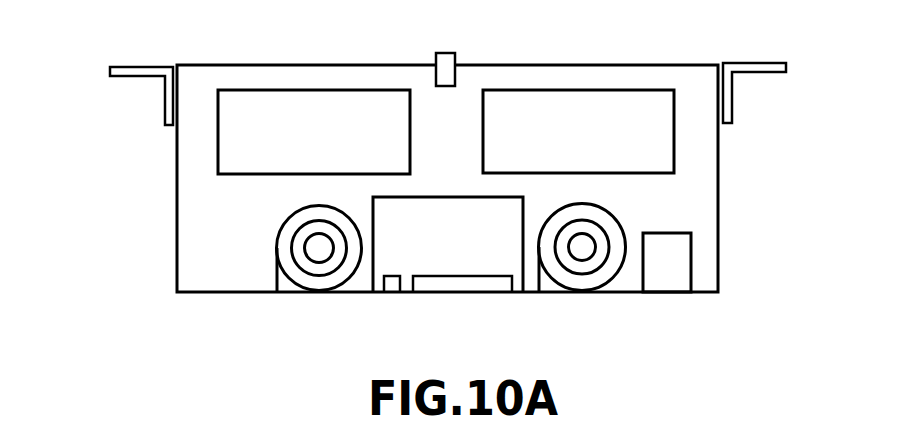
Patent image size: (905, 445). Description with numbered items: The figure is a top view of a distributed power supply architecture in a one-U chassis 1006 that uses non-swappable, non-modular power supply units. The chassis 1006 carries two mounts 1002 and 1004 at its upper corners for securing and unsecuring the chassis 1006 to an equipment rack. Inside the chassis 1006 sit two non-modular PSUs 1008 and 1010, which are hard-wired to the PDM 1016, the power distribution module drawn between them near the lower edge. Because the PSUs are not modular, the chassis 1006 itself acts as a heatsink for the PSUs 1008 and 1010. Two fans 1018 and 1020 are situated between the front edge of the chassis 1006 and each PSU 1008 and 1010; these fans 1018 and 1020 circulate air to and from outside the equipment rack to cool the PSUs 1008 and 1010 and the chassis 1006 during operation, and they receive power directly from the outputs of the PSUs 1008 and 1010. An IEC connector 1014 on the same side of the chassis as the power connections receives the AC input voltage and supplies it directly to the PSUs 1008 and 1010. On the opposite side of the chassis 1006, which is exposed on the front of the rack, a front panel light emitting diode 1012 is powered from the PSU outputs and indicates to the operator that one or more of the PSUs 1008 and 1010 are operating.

The mount 1002 is at (118, 65).
The mount 1004 is at (763, 62).
The 1U chassis 1006 is at (719, 207).
The non-modular PSU 1008 is at (262, 176).
The non-modular PSU 1010 is at (668, 175).
The front panel light emitting diode (LED) 1012 is at (445, 53).
The IEC connector 1014 is at (687, 293).
The PDM 1016 is at (460, 293).
The fan 1018 is at (558, 293).
The fan 1020 is at (290, 293).